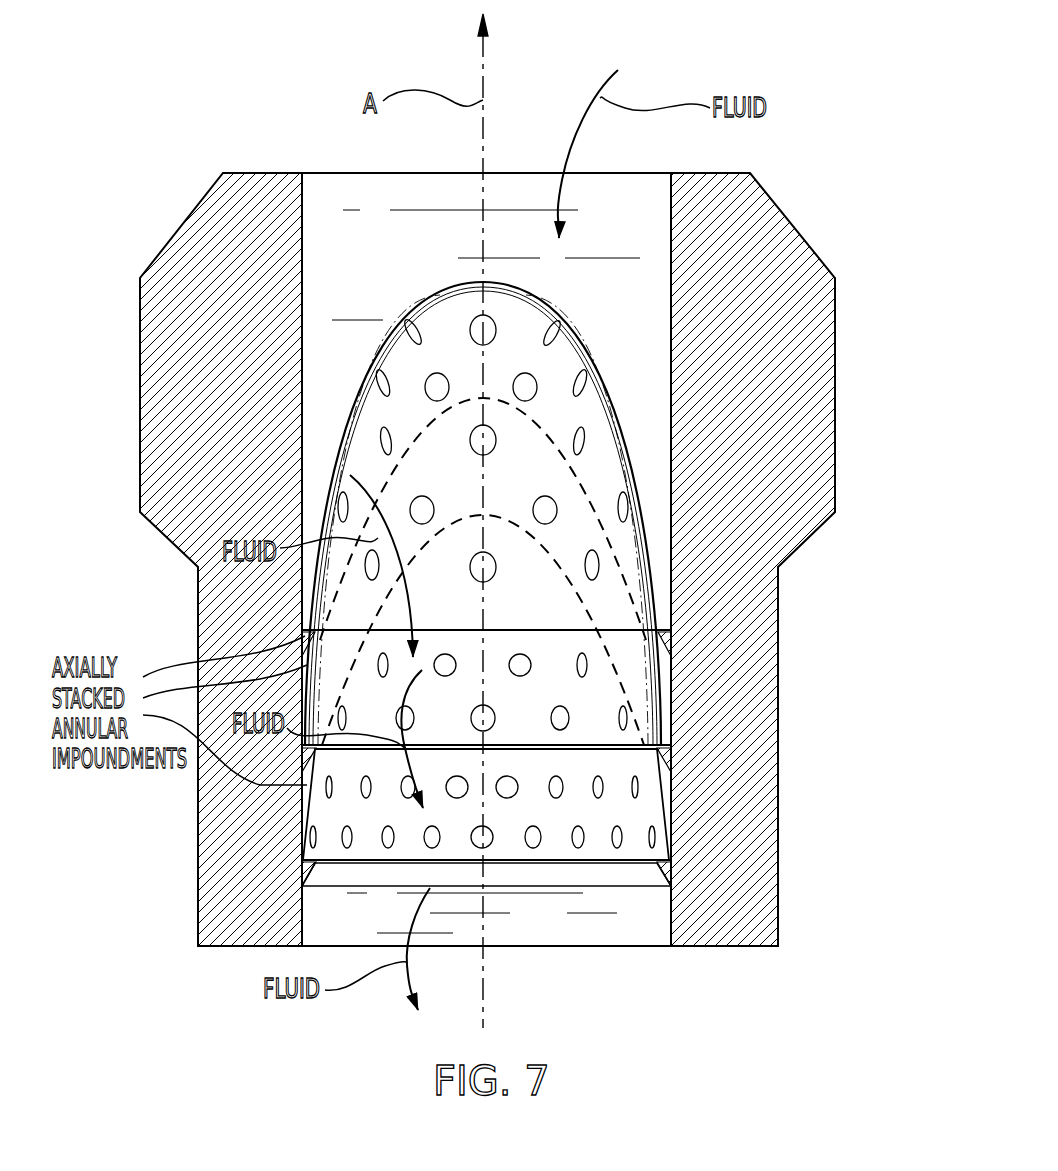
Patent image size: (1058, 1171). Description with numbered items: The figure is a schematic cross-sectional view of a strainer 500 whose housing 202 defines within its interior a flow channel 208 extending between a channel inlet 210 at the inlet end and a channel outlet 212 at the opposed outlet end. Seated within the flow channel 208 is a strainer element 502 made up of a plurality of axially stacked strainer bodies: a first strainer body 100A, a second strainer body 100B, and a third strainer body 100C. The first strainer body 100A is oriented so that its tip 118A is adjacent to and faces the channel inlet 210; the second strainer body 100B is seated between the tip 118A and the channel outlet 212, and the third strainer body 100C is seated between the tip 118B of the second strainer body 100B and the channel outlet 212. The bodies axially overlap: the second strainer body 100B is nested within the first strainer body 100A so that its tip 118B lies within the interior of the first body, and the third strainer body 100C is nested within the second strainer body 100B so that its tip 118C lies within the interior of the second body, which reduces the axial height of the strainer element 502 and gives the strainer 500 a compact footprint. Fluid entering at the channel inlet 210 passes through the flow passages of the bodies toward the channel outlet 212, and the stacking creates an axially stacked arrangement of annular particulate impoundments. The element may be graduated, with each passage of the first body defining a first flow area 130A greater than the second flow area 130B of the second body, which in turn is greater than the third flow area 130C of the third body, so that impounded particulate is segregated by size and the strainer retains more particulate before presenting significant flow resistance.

The housing 202 is at (760, 237).
The channel inlet 210 is at (638, 217).
The flow channel 208 is at (663, 385).
The channel outlet 212 is at (557, 935).
The tip of first strainer body 118A is at (483, 283).
The tip of second strainer body 118B is at (484, 398).
The tip of third strainer body 118C is at (483, 515).
The first strainer body 100A is at (605, 412).
The second strainer body 100B is at (650, 690).
The third strainer body 100C is at (648, 808).
The first flow area 130A is at (437, 387).
The second flow area 130B is at (582, 663).
The third flow area 130C is at (347, 837).
The strainer element 502 is at (647, 457).
The strainer 500 is at (178, 1012).